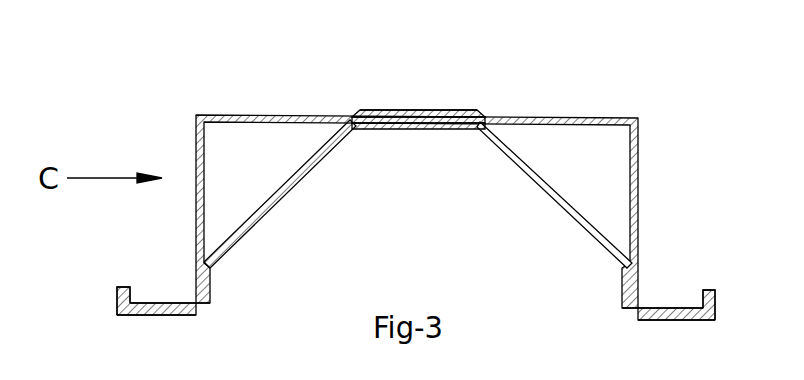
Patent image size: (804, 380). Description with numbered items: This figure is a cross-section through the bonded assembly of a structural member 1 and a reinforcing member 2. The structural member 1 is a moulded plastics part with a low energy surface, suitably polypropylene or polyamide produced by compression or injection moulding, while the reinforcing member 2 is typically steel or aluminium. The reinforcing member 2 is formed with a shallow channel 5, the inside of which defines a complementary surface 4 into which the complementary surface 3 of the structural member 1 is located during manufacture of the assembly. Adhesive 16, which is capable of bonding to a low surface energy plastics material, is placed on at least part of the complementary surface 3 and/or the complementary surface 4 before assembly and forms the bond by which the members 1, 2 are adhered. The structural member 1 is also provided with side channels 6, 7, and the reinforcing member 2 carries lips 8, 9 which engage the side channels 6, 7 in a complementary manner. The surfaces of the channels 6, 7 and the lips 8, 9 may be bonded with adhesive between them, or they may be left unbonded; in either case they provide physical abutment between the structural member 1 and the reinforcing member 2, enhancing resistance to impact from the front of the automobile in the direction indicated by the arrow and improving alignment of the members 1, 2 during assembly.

The structural member 1 is at (268, 217).
The reinforcing member 2 is at (195, 148).
The complementary surface of the structural member 3 is at (433, 126).
The complementary surface of the reinforcing member 4 is at (413, 120).
The shallow channel 5 is at (418, 108).
The adhesive 16 is at (387, 108).
The side channel 6 is at (143, 317).
The side channel 7 is at (680, 320).
The lip 8 is at (170, 302).
The lip 9 is at (662, 303).